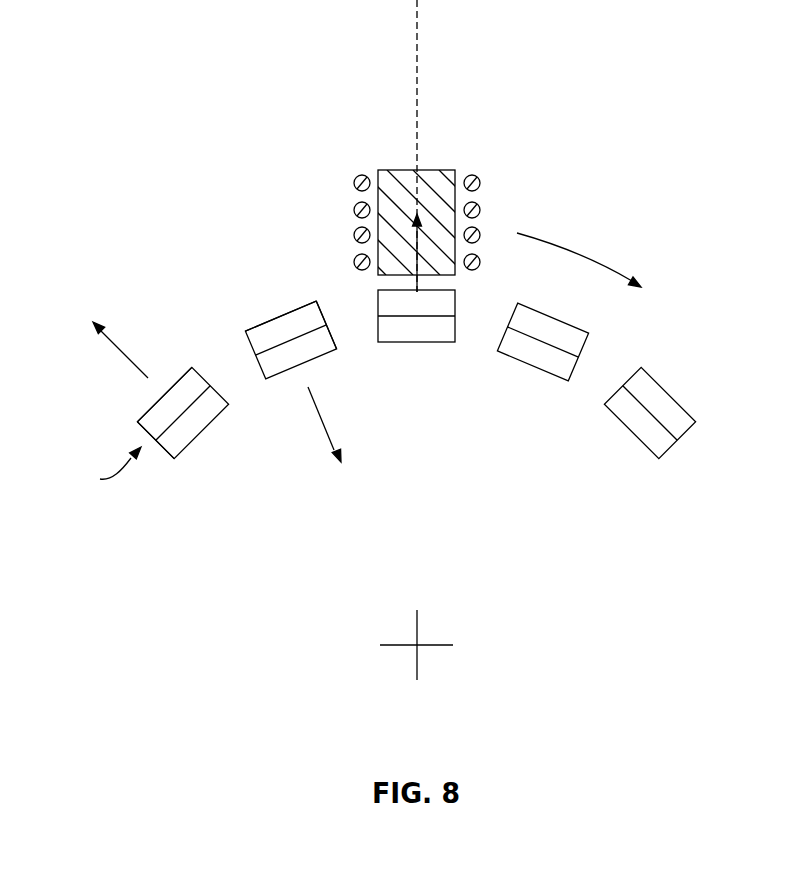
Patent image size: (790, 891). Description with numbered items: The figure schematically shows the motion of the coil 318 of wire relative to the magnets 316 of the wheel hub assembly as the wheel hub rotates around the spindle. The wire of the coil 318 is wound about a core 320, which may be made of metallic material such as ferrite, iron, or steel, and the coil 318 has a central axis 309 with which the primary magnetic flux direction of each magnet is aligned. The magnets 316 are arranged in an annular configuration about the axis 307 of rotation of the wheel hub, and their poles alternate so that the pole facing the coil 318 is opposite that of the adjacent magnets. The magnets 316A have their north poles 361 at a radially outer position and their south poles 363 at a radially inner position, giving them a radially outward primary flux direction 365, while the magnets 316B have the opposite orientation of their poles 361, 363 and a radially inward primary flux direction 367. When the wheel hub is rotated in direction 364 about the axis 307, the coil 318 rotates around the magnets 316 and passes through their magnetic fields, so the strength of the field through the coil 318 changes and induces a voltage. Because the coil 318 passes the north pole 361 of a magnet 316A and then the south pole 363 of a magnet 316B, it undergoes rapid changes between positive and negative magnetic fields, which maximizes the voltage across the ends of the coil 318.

The axis of rotation 307 is at (418, 645).
The central axis of coil 309 is at (417, 48).
The magnets 316 is at (94, 471).
The magnets with radially outer north poles 316A is at (440, 342).
The magnets with radially inner north poles 316B is at (292, 372).
The coil 318 is at (481, 208).
The core 320 is at (437, 170).
The north pole 361 is at (154, 417).
The south pole 363 is at (167, 450).
The direction of rotation 364 is at (595, 262).
The radially outward primary flux direction 365 is at (413, 240).
The radially inward primary flux direction 367 is at (328, 443).